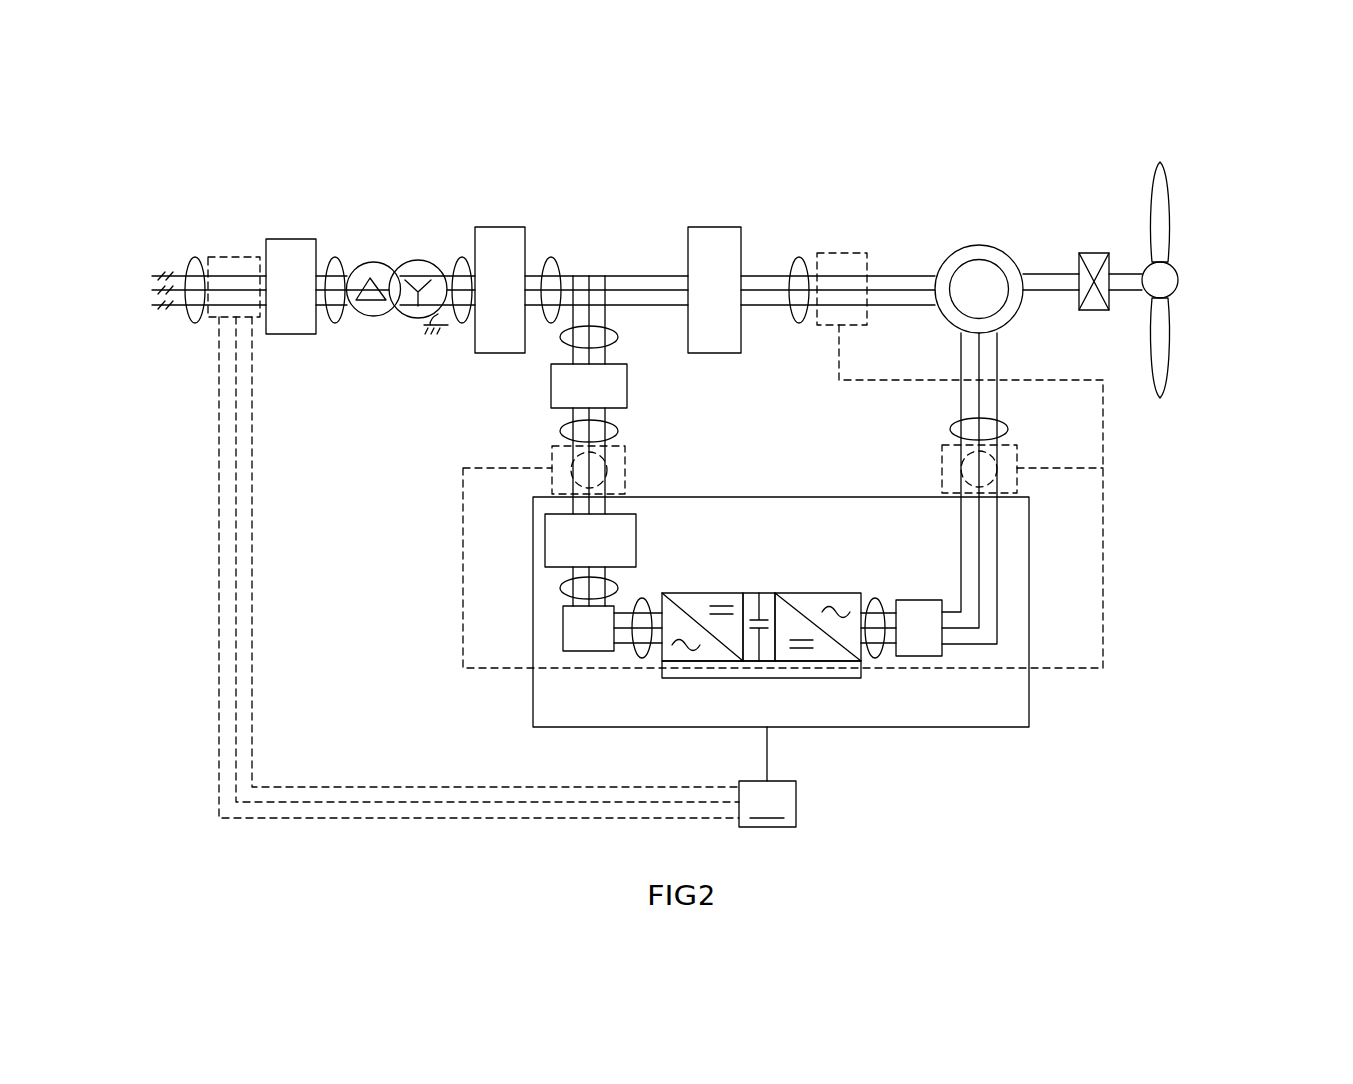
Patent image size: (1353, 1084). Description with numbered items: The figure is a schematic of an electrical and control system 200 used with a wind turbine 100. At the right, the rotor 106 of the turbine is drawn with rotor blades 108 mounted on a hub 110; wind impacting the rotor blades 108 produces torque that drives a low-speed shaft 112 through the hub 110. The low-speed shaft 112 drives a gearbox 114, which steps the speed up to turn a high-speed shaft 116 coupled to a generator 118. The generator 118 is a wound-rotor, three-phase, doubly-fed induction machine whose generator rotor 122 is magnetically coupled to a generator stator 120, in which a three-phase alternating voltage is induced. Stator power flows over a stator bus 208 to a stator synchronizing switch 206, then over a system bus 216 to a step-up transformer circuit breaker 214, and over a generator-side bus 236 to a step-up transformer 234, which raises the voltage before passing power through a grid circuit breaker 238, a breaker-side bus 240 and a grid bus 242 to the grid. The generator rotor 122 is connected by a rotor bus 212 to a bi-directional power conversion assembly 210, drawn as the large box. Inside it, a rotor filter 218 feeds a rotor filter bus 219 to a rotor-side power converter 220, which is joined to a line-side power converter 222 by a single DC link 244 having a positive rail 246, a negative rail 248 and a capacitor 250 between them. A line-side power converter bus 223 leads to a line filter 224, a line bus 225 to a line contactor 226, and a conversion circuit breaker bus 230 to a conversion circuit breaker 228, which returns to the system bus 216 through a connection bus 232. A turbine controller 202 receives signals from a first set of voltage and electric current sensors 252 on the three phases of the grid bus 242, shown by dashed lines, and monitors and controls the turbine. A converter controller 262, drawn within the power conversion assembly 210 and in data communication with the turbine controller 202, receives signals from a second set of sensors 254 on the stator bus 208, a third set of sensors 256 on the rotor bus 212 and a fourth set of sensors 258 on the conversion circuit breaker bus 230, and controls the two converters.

The wind turbine 100 is at (1197, 251).
The rotor 106 is at (1200, 280).
The rotor blades 108 is at (1168, 210).
The hub 110 is at (1180, 280).
The low-speed shaft 112 is at (1130, 273).
The gearbox 114 is at (1090, 253).
The high-speed shaft 116 is at (1048, 273).
The generator 118 is at (980, 237).
The generator stator 120 is at (990, 248).
The generator rotor 122 is at (970, 265).
The electrical and control system 200 is at (238, 116).
The turbine controller 202 is at (767, 777).
The stator synchronizing switch 206 is at (700, 227).
The stator bus 208 is at (799, 257).
The power conversion assembly 210 is at (1029, 597).
The rotor bus 212 is at (1008, 429).
The step-up transformer circuit breaker 214 is at (503, 227).
The system bus 216 is at (551, 257).
The rotor filter 218 is at (925, 605).
The rotor filter bus 219 is at (875, 598).
The rotor-side power converter 220 is at (861, 655).
The line-side power converter 222 is at (662, 660).
The line-side power converter bus 223 is at (658, 585).
The line filter 224 is at (563, 626).
The line bus 225 is at (560, 585).
The line contactor 226 is at (545, 542).
The conversion circuit breaker 228 is at (627, 383).
The conversion circuit breaker bus 230 is at (618, 431).
The connection bus 232 is at (618, 337).
The step-up transformer 234 is at (415, 260).
The generator-side bus 236 is at (462, 257).
The grid circuit breaker 238 is at (292, 239).
The breaker-side bus 240 is at (335, 257).
The grid bus 242 is at (193, 257).
The DC link 244 is at (731, 619).
The positive rail 246 is at (770, 593).
The negative rail 248 is at (753, 631).
The capacitor 250 is at (758, 618).
The first set of voltage and electric current sensors 252 is at (208, 335).
The second set of voltage and electric current sensors 254 is at (860, 250).
The third set of voltage and electric current sensors 256 is at (925, 470).
The fourth set of voltage and electric current sensors 258 is at (625, 467).
The converter controller 262 is at (822, 668).